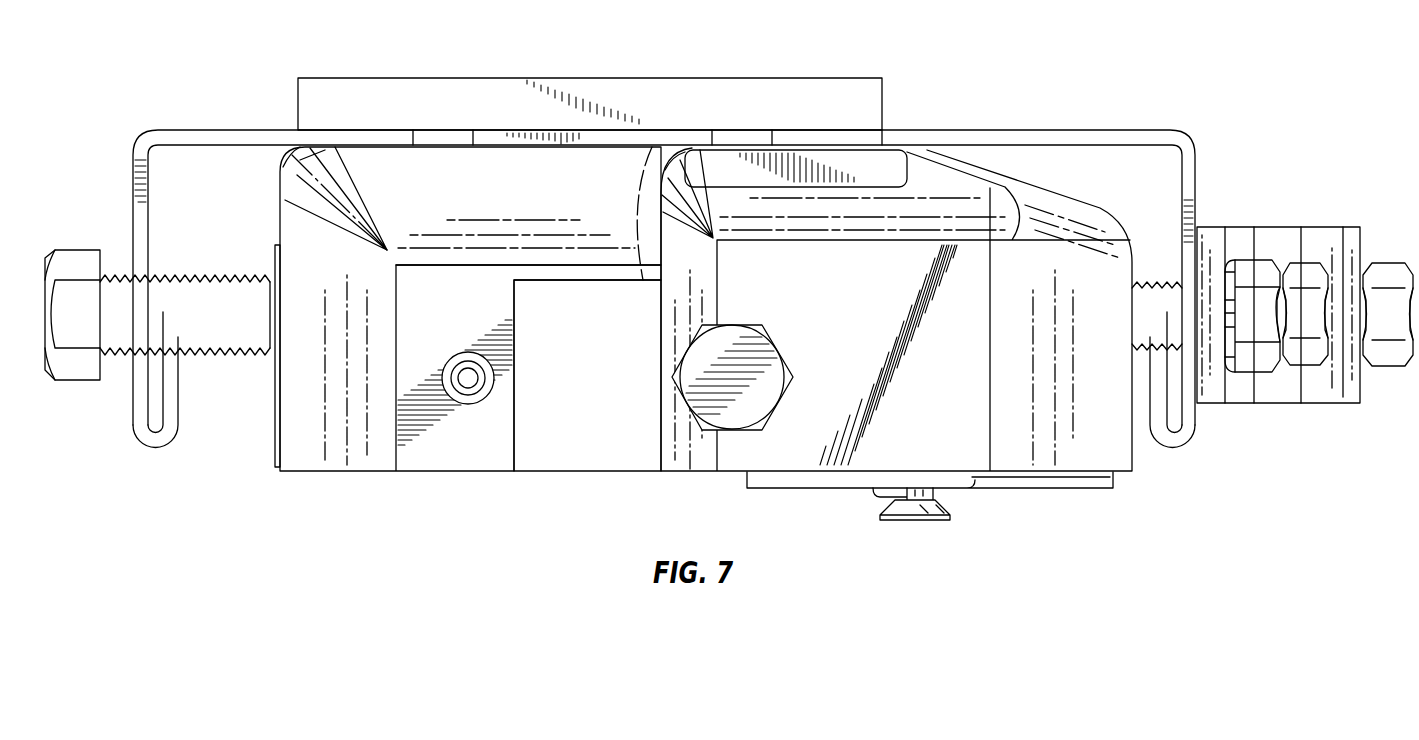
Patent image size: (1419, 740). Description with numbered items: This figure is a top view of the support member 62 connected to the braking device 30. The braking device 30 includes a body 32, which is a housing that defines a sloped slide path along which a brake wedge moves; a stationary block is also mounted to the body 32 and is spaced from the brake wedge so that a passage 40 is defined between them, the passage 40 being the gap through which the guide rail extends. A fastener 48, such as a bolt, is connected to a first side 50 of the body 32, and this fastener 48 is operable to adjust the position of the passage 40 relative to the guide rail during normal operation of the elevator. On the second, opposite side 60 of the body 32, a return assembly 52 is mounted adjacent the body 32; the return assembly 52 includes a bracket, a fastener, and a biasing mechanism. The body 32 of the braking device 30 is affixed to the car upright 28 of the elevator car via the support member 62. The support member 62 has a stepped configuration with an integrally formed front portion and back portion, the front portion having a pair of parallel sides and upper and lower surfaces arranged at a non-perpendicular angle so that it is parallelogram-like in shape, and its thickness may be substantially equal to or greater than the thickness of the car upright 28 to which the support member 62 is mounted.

The car upright 28 is at (1027, 142).
The braking device 30 is at (1020, 452).
The body 32 is at (412, 200).
The passage 40 is at (580, 408).
The fastener 48 is at (108, 262).
The first side 50 is at (282, 403).
The return assembly 52 is at (1337, 246).
The second side 60 is at (1185, 187).
The support member 62 is at (488, 105).